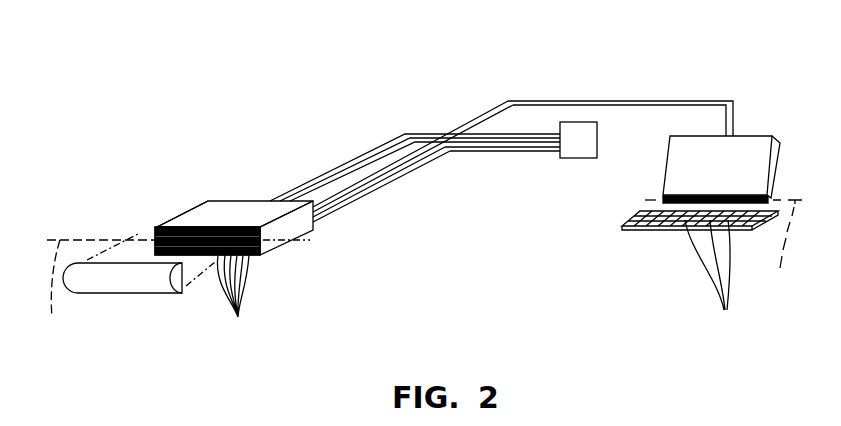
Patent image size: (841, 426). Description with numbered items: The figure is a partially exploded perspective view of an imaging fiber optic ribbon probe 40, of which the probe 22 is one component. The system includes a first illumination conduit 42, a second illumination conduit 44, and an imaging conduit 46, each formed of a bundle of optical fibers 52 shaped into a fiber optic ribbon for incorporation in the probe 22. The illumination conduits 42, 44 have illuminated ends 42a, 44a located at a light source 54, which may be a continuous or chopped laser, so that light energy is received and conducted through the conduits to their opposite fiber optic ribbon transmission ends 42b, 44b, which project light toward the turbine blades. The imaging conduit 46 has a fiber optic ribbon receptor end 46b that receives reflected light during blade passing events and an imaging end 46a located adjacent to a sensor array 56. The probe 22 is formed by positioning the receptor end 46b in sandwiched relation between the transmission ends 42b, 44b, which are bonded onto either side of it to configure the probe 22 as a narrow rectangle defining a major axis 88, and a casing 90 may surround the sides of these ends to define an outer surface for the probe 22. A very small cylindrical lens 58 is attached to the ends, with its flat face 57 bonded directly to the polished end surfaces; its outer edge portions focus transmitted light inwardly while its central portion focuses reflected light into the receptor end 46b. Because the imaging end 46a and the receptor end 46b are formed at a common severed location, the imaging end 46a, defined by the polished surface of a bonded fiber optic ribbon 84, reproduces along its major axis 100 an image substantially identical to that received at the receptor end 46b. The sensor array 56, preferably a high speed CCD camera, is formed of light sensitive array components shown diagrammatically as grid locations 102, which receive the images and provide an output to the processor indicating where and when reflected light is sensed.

The imaging fiber optic ribbon probe 40 is at (233, 98).
The probe 22 is at (198, 202).
The casing 90 is at (157, 227).
The fiber optic ribbon receptor end 46b is at (155, 233).
The fiber optic ribbon transmission end 44b is at (263, 233).
The fiber optic ribbon transmission end 42b is at (262, 253).
The imaging conduit 46 is at (385, 150).
The second illumination conduit 44 is at (310, 178).
The illuminated end 44a is at (560, 127).
The first illumination conduit 42 is at (362, 197).
The illuminated end 42a is at (558, 153).
The imaging end 46a is at (662, 201).
The light source 54 is at (575, 158).
The bonded fiber optic ribbon 84 is at (764, 143).
The sensor array 56 is at (637, 231).
The grid locations 102 is at (717, 279).
The major axis 100 is at (786, 253).
The cylindrical lens 58 is at (122, 283).
The flat face 57 is at (193, 283).
The major axis 88 is at (95, 291).
The optical fibers 52 is at (236, 301).